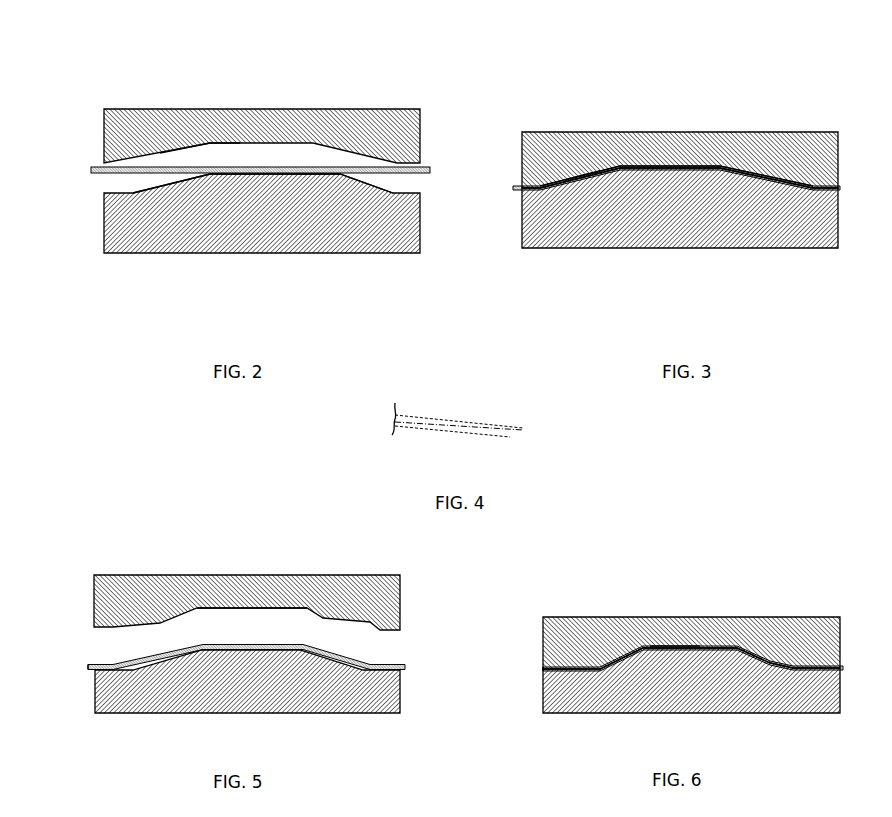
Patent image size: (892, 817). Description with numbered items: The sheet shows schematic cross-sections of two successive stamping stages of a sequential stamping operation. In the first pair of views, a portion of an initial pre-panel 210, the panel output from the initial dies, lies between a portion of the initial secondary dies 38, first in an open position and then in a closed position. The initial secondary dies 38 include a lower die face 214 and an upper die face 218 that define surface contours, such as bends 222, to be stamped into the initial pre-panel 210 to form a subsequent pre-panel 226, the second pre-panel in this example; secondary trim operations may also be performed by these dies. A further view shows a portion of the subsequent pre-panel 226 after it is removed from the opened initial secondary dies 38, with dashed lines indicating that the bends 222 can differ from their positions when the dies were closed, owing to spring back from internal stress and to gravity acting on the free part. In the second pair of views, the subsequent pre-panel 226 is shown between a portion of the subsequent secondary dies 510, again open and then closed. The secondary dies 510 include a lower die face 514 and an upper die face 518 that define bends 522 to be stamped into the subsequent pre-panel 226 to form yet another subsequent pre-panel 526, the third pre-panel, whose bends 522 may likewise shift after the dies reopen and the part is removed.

In FIG. 2, the initial secondary dies 38 is at (260, 257).
In FIG. 3, the initial secondary dies 38 is at (737, 257).
In FIG. 2, the initial pre-panel 210 is at (103, 176).
In FIG. 2, the lower die face 214 is at (150, 188).
In FIG. 3, the lower die face 214 is at (695, 167).
In FIG. 2, the upper die face 218 is at (203, 148).
In FIG. 3, the upper die face 218 is at (584, 178).
In FIG. 2, the bends 222 is at (122, 163).
In FIG. 3, the subsequent pre-panel 226 is at (513, 190).
In FIG. 4, the subsequent pre-panel 226 is at (510, 437).
In FIG. 5, the subsequent pre-panel 226 is at (90, 667).
In FIG. 5, the subsequent secondary dies 510 is at (228, 716).
In FIG. 6, the subsequent secondary dies 510 is at (678, 717).
In FIG. 5, the lower die face 514 is at (167, 664).
In FIG. 6, the lower die face 514 is at (593, 666).
In FIG. 5, the upper die face 518 is at (250, 606).
In FIG. 6, the upper die face 518 is at (680, 650).
In FIG. 5, the bends 522 is at (133, 625).
In FIG. 6, the subsequent pre-panel 526 is at (543, 670).